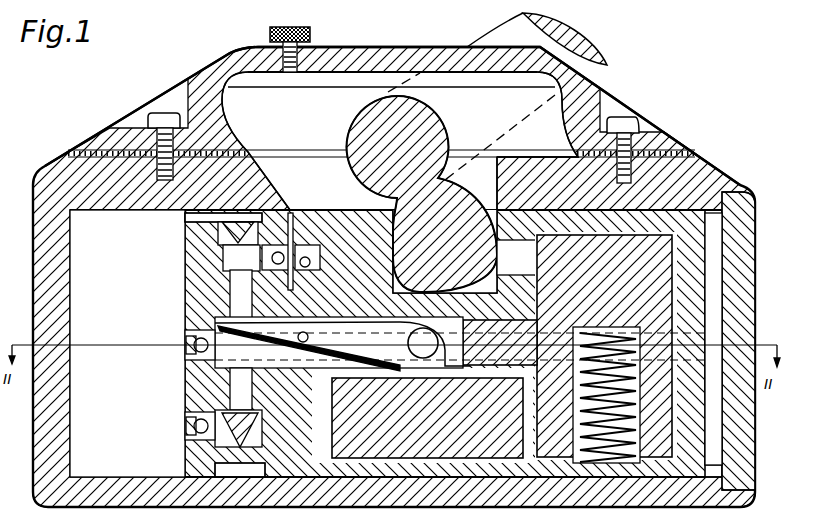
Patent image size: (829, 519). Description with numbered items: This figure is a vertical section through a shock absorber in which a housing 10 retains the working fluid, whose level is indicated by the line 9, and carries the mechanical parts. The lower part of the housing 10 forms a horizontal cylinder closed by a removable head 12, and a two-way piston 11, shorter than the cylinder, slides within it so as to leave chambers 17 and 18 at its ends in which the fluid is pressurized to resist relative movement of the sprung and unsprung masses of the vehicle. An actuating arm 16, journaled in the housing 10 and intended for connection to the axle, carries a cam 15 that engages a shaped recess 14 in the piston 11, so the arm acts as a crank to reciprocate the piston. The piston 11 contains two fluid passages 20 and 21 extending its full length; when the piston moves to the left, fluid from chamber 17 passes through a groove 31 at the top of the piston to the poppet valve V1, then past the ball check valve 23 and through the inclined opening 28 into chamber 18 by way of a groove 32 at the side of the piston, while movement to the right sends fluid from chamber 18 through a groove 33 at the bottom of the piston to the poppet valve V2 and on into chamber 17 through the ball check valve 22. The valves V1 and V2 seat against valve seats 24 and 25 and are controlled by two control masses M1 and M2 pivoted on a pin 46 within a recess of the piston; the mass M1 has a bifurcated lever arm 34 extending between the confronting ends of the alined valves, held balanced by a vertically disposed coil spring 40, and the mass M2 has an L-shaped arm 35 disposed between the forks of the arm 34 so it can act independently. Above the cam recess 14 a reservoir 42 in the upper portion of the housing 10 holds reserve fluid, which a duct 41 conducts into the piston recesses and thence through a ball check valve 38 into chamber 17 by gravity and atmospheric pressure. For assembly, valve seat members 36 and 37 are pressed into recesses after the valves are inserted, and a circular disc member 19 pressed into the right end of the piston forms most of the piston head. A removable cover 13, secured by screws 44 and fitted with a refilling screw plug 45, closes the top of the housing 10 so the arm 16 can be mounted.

The line 9 is at (320, 87).
The housing 10 is at (70, 173).
The two-way piston 11 is at (195, 294).
The removable head 12 is at (748, 308).
The removable cover 13 is at (210, 83).
The recess 14 is at (445, 225).
The cam 15 is at (470, 212).
The actuating arm 16 is at (597, 70).
The chamber 17 is at (117, 329).
The chamber 18 is at (722, 270).
The circular disc member 19 is at (690, 402).
The fluid passage 20 is at (190, 213).
The fluid passage 21 is at (243, 473).
The ball check valve 22 is at (190, 424).
The ball check valve 23 is at (264, 243).
The valve seat 24 is at (262, 256).
The valve seat 25 is at (222, 445).
The inclined opening 28 is at (305, 258).
The groove 31 is at (215, 220).
The groove 32 is at (362, 369).
The groove 33 is at (423, 465).
The bifurcated lever arm 34 is at (342, 342).
The L-shaped arm 35 is at (198, 334).
The valve seat member 36 is at (220, 235).
The valve seat member 37 is at (232, 462).
The ball check valve 38 is at (192, 350).
The spring 40 is at (613, 445).
The duct 41 is at (520, 273).
The reservoir 42 is at (320, 120).
The screws 44 is at (163, 113).
The refilling screw plug 45 is at (270, 32).
The pin 46 is at (450, 366).
The control mass M1 is at (570, 346).
The control mass M2 is at (422, 415).
The poppet valve V1 is at (241, 282).
The poppet valve V2 is at (241, 389).